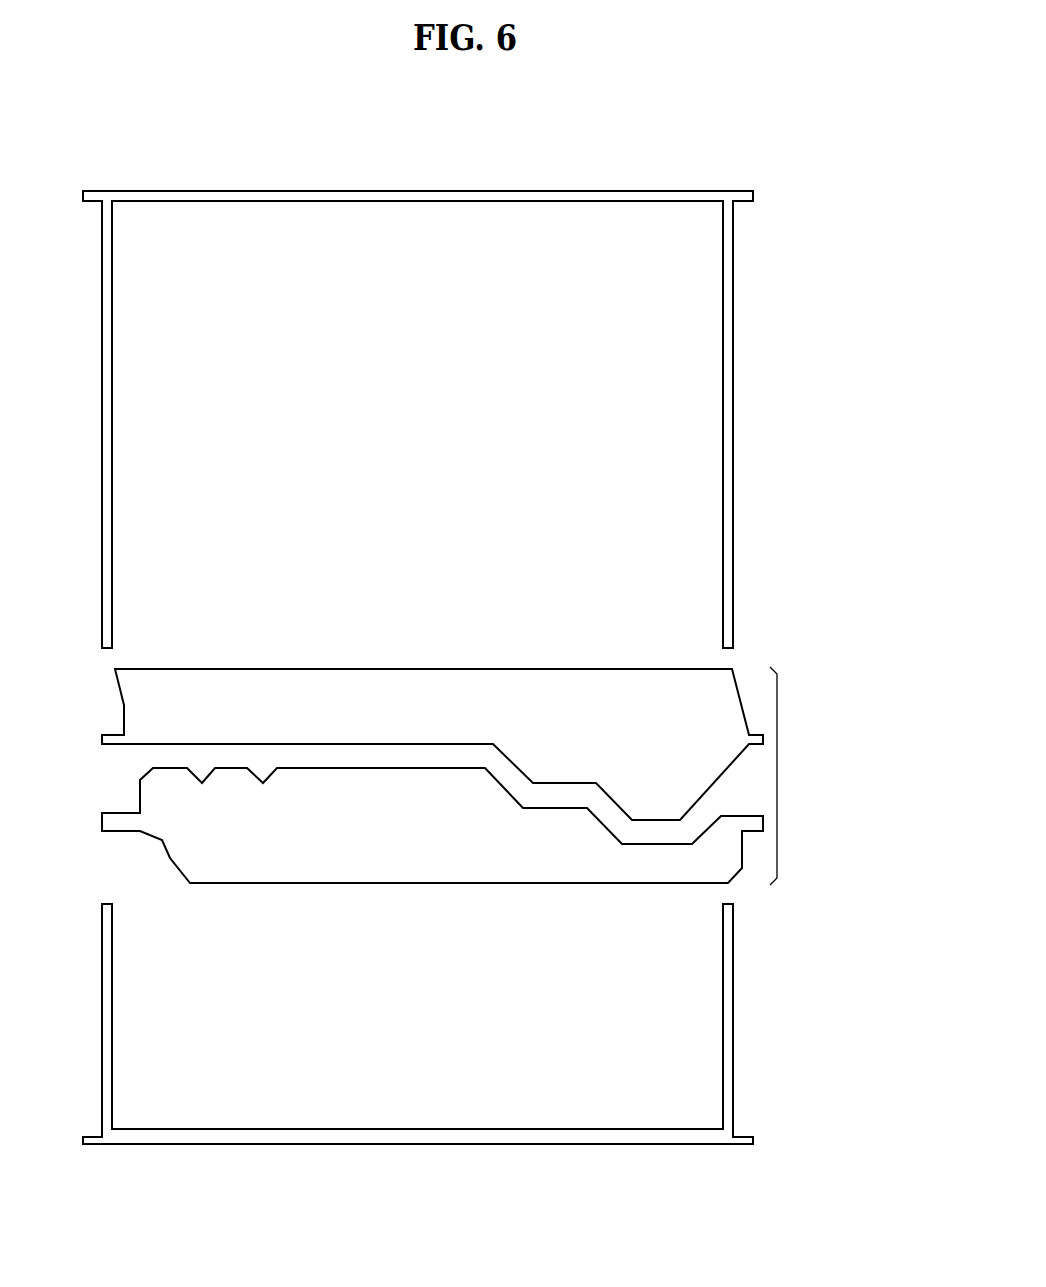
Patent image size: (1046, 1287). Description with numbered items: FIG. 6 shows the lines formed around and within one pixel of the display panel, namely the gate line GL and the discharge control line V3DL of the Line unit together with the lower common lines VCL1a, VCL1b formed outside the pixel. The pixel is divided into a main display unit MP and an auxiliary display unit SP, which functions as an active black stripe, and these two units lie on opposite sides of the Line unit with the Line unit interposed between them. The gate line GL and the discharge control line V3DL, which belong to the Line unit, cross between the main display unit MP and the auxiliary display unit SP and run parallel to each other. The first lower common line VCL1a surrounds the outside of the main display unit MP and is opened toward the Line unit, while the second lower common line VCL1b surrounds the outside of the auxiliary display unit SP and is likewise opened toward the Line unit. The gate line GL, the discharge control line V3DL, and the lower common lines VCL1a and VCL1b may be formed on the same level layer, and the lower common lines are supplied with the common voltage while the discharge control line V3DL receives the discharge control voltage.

The first lower common line VCL1a is at (675, 197).
The second lower common line VCL1b is at (675, 1140).
The main display unit MP is at (434, 428).
The auxiliary display unit SP is at (434, 1018).
The discharge control line V3DL is at (123, 690).
The gate line GL is at (110, 820).
The line unit Line unit is at (833, 776).